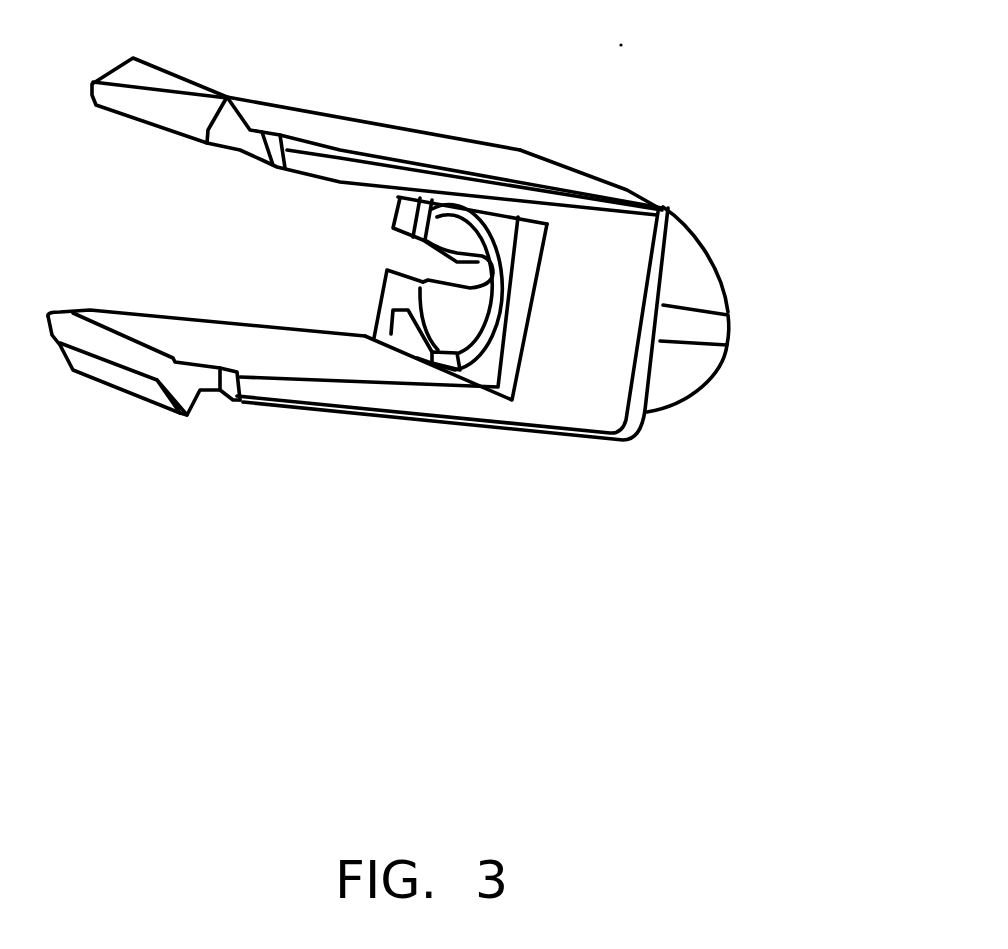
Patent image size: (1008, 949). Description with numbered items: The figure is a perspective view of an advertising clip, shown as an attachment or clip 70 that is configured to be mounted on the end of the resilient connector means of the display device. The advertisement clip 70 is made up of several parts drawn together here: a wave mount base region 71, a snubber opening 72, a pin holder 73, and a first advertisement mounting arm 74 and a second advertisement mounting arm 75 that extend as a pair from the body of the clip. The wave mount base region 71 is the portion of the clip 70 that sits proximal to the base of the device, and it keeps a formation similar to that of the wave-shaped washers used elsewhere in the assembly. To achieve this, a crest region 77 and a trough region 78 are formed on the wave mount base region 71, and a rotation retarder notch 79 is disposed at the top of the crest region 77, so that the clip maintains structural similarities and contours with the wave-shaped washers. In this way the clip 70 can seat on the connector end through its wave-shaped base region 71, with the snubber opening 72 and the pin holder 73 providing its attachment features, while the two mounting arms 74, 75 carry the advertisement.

The advertisement clip 70 is at (487, 462).
The wave mount base region 71 is at (737, 340).
The snubber opening 72 is at (729, 340).
The pin holder 73 is at (470, 270).
The first advertisement mounting arm 74 is at (322, 132).
The second advertisement mounting arm 75 is at (317, 412).
The crest region 77 is at (728, 302).
The trough region 78 is at (638, 195).
The rotation retarder notch 79 is at (728, 346).